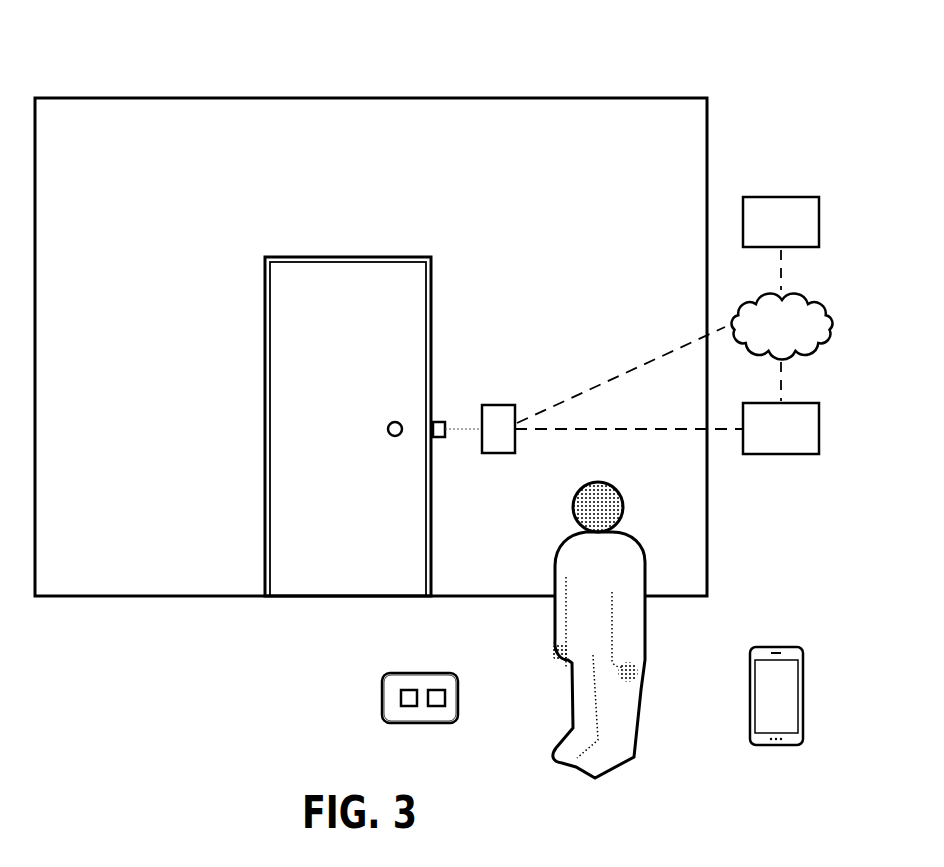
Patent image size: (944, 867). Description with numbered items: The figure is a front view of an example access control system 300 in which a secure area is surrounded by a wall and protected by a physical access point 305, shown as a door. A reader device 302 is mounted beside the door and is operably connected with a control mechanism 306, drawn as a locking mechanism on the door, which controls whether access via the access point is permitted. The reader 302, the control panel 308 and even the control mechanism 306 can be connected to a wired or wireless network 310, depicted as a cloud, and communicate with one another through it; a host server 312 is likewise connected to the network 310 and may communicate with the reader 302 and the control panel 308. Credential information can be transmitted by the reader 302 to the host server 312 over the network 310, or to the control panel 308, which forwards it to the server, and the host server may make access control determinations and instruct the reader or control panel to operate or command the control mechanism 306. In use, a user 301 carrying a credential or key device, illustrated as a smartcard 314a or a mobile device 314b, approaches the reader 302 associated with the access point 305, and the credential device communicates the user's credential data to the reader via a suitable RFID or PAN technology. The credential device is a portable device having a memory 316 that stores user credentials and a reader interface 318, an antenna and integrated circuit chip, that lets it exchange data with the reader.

The access control system 300 is at (672, 28).
The user 301 is at (648, 650).
The reader device 302 is at (515, 407).
The access point 305 is at (415, 307).
The control mechanism 306 is at (438, 437).
The control panel 308 is at (770, 454).
The network 310 is at (812, 358).
The host server 312 is at (805, 247).
The smartcard 314a is at (382, 700).
The mobile device 314b is at (750, 697).
The memory 316 is at (413, 707).
The reader interface 318 is at (458, 697).